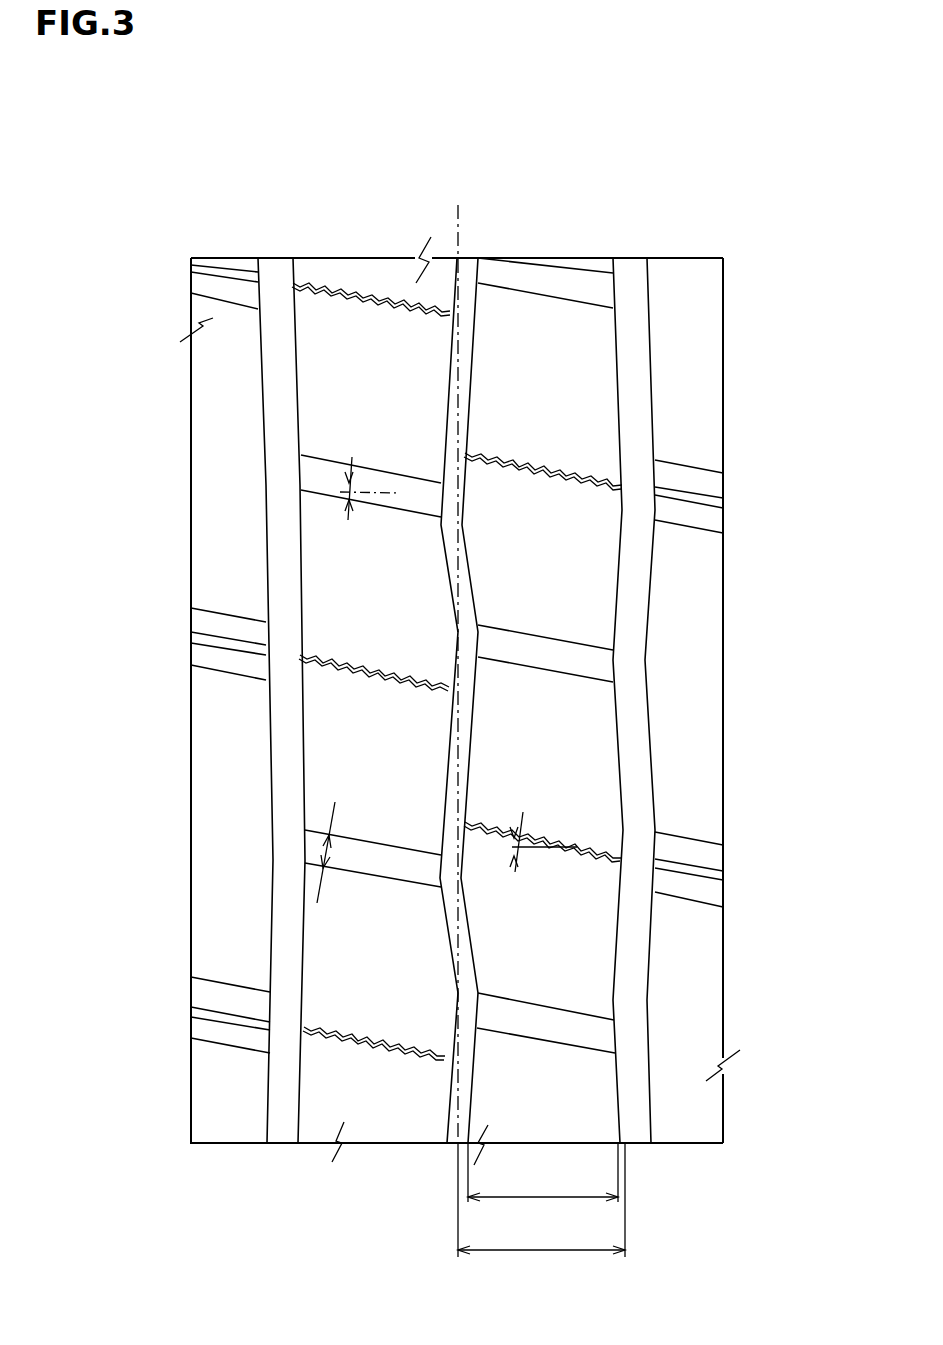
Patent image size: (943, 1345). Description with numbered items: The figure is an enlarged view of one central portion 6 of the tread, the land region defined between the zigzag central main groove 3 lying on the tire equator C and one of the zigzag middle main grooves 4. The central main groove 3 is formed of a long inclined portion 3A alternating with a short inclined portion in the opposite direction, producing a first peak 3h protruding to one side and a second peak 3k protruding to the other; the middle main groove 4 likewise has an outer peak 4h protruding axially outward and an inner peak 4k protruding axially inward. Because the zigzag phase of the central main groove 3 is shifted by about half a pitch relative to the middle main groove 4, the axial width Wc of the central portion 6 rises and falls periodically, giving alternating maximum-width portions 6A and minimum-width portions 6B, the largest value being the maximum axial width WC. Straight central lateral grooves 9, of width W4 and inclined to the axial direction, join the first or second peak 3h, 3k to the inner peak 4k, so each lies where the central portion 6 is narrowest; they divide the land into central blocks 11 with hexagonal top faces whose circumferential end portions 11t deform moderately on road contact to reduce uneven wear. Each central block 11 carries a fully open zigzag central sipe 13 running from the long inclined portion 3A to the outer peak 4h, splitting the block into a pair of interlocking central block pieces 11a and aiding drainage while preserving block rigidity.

The central main groove 3 is at (470, 275).
The middle main groove 4 is at (276, 285).
The central portion 6 is at (371, 275).
The maximum-width portion 6A is at (278, 657).
The minimum-width portion 6B is at (298, 853).
The central lateral groove 9 is at (388, 480).
The central block 11 is at (590, 380).
The central block piece 11a is at (327, 557).
The circumferential end portion 11t is at (580, 691).
The central sipe 13 is at (487, 827).
The first peak 3h is at (457, 638).
The second peak 3k is at (440, 885).
The long inclined portion 3A is at (447, 730).
The outer peak 4h is at (262, 620).
The inner peak 4k is at (280, 842).
The tire equator C is at (458, 658).
The width of the central lateral groove W4 is at (330, 845).
The axial width of the central portion Wc is at (543, 1172).
The maximum axial width of the central portion WC is at (541, 1200).